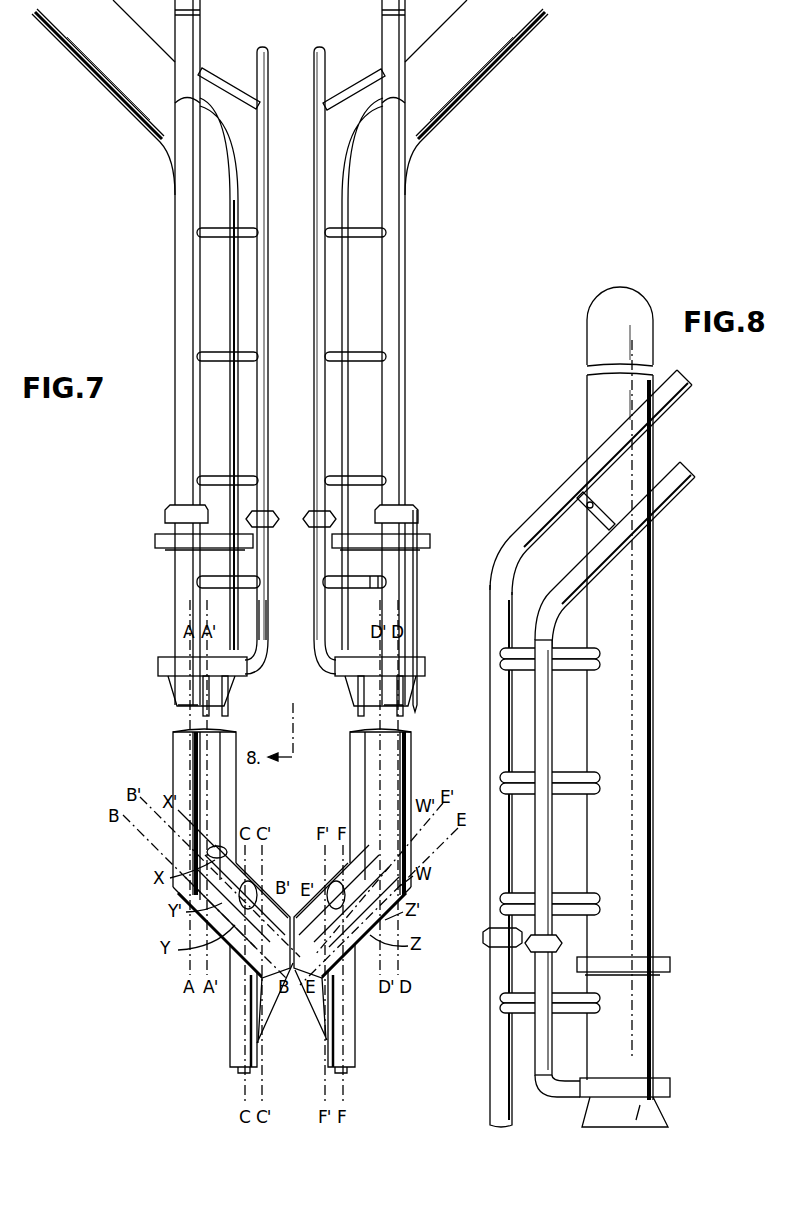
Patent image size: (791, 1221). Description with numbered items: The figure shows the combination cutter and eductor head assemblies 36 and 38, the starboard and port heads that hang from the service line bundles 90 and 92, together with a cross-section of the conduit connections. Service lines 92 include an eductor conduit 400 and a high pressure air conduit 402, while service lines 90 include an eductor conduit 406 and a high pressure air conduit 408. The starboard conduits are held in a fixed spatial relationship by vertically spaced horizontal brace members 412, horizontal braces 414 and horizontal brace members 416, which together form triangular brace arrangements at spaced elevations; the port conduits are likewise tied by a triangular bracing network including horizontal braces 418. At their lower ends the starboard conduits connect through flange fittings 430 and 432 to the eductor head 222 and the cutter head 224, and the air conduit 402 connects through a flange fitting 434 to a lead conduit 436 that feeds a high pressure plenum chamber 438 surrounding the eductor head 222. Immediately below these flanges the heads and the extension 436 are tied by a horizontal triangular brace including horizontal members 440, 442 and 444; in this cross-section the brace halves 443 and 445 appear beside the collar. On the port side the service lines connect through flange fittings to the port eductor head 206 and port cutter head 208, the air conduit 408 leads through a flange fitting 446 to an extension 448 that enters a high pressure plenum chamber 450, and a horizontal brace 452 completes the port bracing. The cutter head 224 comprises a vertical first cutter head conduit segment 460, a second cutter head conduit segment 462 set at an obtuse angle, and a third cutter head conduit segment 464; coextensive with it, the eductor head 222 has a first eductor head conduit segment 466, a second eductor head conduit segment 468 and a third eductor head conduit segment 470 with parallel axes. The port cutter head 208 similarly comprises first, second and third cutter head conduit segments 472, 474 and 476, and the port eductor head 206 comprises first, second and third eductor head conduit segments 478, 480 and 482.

In FIG. 7, the cutter and eductor head assembly 36 is at (450, 536).
In FIG. 8, the cutter and eductor head assembly 36 is at (698, 727).
In FIG. 7, the cutter and eductor head assembly 38 is at (84, 603).
In FIG. 7, the service line bundle 90 is at (448, 255).
In FIG. 7, the service line bundle 92 is at (128, 248).
In FIG. 7, the port eductor head 206 is at (432, 567).
In FIG. 7, the port cutter head 208 is at (403, 692).
In FIG. 7, the eductor head 222 is at (150, 637).
In FIG. 7, the cutter head 224 is at (235, 690).
In FIG. 8, the cutter head 224 is at (500, 1098).
In FIG. 7, the eductor conduit 400 is at (112, 30).
In FIG. 7, the high pressure air conduit 402 is at (259, 47).
In FIG. 7, the eductor conduit 406 is at (495, 30).
In FIG. 7, the high pressure air conduit 408 is at (324, 47).
In FIG. 7, the horizontal brace member 412 is at (240, 87).
In FIG. 8, the horizontal brace member 412 is at (581, 500).
In FIG. 8, the horizontal brace 414 is at (598, 506).
In FIG. 8, the horizontal brace member 416 is at (596, 667).
In FIG. 7, the horizontal brace 418 is at (347, 88).
In FIG. 7, the flange fitting 430 is at (132, 534).
In FIG. 8, the flange fitting 430 is at (676, 958).
In FIG. 7, the flange fitting 432 is at (170, 510).
In FIG. 8, the flange fitting 432 is at (494, 948).
In FIG. 7, the flange fitting 434 is at (268, 511).
In FIG. 8, the flange fitting 434 is at (570, 946).
In FIG. 7, the lead conduit 436 is at (267, 548).
In FIG. 8, the lead conduit 436 is at (550, 1062).
In FIG. 7, the high pressure plenum chamber 438 is at (158, 670).
In FIG. 8, the high pressure plenum chamber 438 is at (665, 1086).
In FIG. 7, the horizontal member 440 is at (215, 582).
In FIG. 8, the horizontal member 440 is at (557, 1001).
In FIG. 7, the horizontal member / flange fitting 442 is at (410, 538).
In FIG. 8, the brace upper half 443 is at (594, 998).
In FIG. 7, the horizontal member / flange fitting 444 is at (402, 510).
In FIG. 8, the brace lower half 445 is at (600, 1007).
In FIG. 7, the flange fitting 446 is at (314, 522).
In FIG. 7, the extension 448 is at (324, 579).
In FIG. 7, the high pressure plenum chamber 450 is at (417, 656).
In FIG. 7, the horizontal brace 452 is at (376, 586).
In FIG. 7, the first cutter head conduit segment 460 is at (173, 776).
In FIG. 7, the second cutter head conduit segment 462 is at (182, 896).
In FIG. 7, the third cutter head conduit segment 464 is at (232, 1036).
In FIG. 7, the first eductor head conduit segment 466 is at (236, 734).
In FIG. 7, the second eductor head conduit segment 468 is at (252, 885).
In FIG. 7, the third eductor head conduit segment 470 is at (264, 998).
In FIG. 7, the first cutter head conduit segment 472 is at (408, 733).
In FIG. 7, the second cutter head conduit segment 474 is at (408, 890).
In FIG. 7, the third cutter head conduit segment 476 is at (356, 1035).
In FIG. 7, the first eductor head conduit segment 478 is at (408, 762).
In FIG. 7, the second eductor head conduit segment 480 is at (405, 905).
In FIG. 7, the third eductor head conduit segment 482 is at (308, 1012).